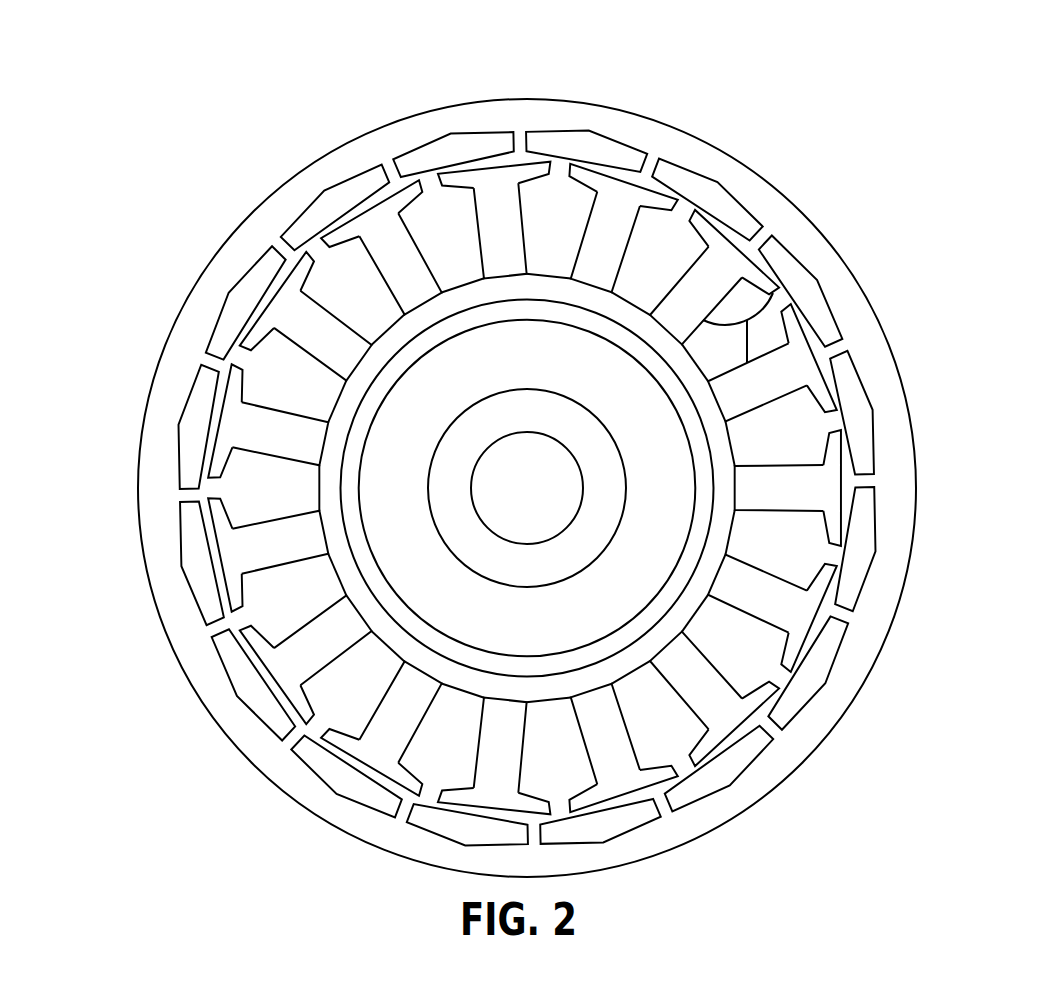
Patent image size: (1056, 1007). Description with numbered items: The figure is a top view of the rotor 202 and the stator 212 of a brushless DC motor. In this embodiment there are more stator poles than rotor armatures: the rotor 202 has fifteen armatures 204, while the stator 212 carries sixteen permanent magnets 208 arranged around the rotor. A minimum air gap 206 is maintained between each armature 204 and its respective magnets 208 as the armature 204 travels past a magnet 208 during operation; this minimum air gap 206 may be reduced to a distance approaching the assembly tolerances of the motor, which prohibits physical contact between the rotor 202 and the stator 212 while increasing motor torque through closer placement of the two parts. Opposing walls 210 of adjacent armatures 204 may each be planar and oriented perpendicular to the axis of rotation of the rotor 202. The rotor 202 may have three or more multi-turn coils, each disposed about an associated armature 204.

The rotor 202 is at (713, 520).
The armatures 204 is at (633, 773).
The minimum air gap 206 is at (803, 647).
The permanent magnets 208 is at (817, 657).
The opposing walls 210 is at (770, 292).
The stator 212 is at (913, 515).